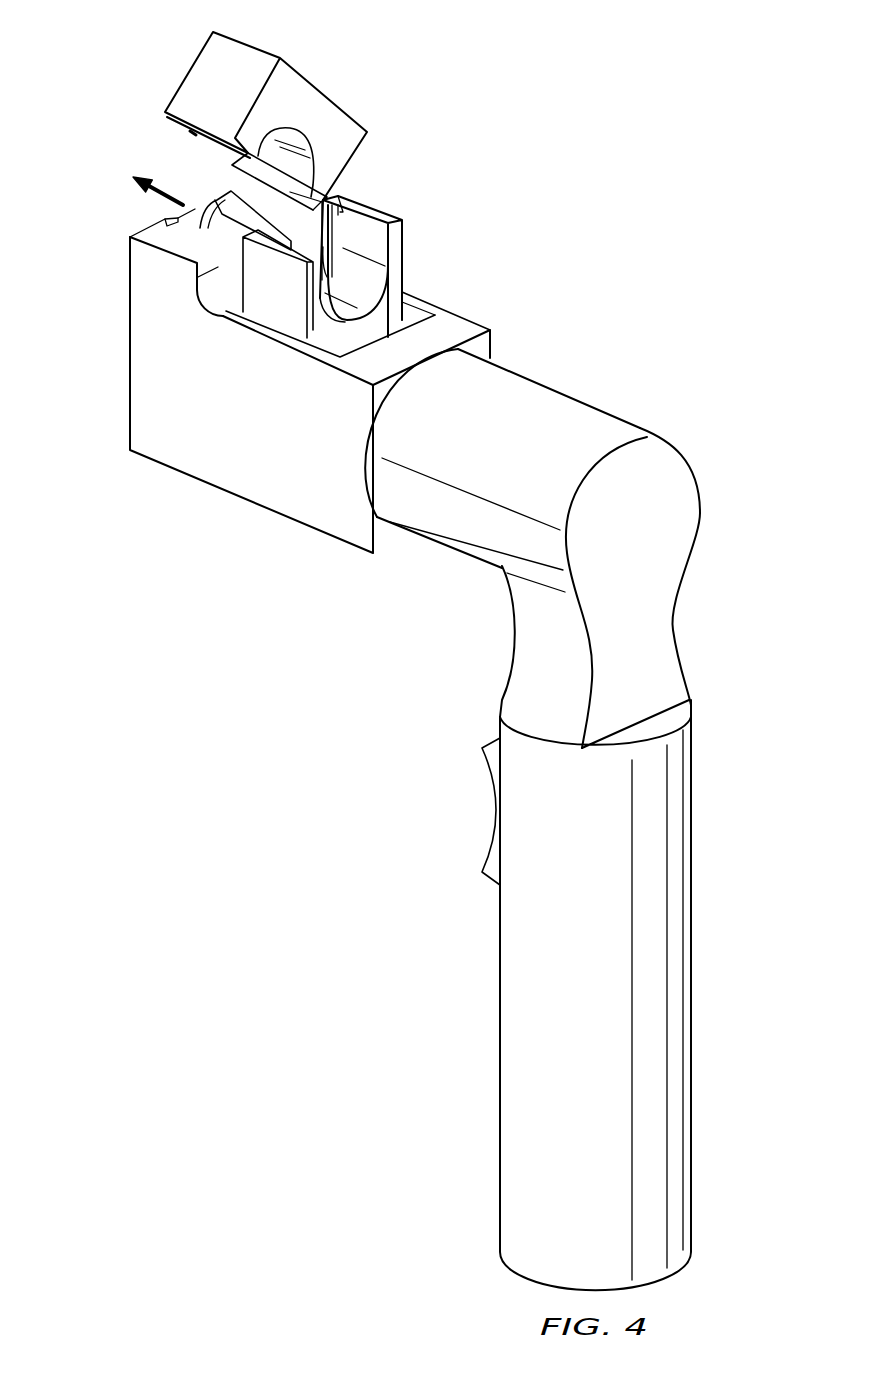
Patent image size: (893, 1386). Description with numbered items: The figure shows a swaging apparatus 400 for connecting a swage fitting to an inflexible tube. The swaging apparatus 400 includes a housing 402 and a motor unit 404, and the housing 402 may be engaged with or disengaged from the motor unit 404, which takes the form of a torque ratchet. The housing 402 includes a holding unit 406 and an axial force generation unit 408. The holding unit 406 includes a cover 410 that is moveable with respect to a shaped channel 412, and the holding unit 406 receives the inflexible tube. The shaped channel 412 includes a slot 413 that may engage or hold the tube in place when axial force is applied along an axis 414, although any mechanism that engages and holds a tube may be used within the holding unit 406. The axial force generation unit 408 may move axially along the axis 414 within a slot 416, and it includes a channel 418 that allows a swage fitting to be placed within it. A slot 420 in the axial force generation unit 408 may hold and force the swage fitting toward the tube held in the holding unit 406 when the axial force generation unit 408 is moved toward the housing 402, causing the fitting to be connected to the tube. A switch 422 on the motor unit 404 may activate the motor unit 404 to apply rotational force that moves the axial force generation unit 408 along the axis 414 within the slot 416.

The swaging apparatus 400 is at (617, 383).
The housing 402 is at (478, 322).
The motor unit 404 is at (700, 500).
The holding unit 406 is at (130, 415).
The axial force generation unit 408 is at (403, 225).
The cover 410 is at (248, 43).
The shaped channel 412 is at (222, 203).
The slot 413 is at (198, 230).
The axis 414 is at (140, 175).
The slot 416 is at (416, 318).
The channel 418 is at (341, 233).
The slot 420 is at (327, 202).
The switch 422 is at (485, 776).